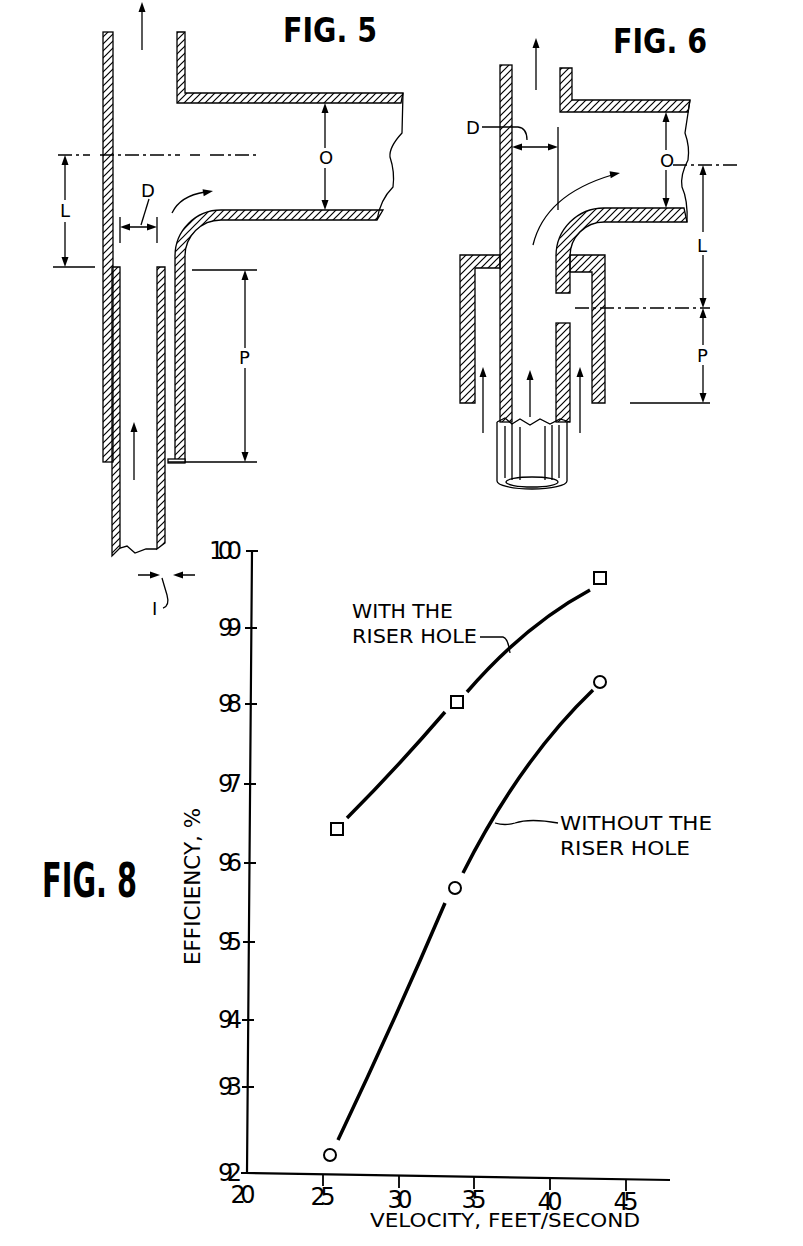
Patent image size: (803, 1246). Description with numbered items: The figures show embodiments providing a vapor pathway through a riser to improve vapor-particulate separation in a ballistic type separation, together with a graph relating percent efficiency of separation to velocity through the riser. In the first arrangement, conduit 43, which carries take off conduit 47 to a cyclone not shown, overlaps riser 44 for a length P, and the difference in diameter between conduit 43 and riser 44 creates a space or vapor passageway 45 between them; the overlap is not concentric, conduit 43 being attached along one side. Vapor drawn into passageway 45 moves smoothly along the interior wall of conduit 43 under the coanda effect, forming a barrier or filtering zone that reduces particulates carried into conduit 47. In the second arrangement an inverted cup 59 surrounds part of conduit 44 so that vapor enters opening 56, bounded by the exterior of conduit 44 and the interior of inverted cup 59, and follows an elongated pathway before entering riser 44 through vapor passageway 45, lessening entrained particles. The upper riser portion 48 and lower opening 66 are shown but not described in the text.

In FIG. 5, the conduit 43 is at (103, 356).
In FIG. 5, the riser 44 is at (112, 511).
In FIG. 6, the riser 44 is at (568, 467).
In FIG. 5, the vapor passageway 45 is at (173, 465).
In FIG. 6, the vapor passageway 45 is at (565, 300).
In FIG. 5, the take off conduit 47 is at (388, 100).
In FIG. 6, the take off conduit 47 is at (677, 222).
In FIG. 5, the vertical riser passage 48 is at (167, 32).
In FIG. 6, the vertical riser passage 48 is at (525, 78).
In FIG. 6, the opening 56 is at (592, 409).
In FIG. 6, the inverted cup 59 is at (605, 342).
In FIG. 6, the left side opening 66 is at (471, 410).